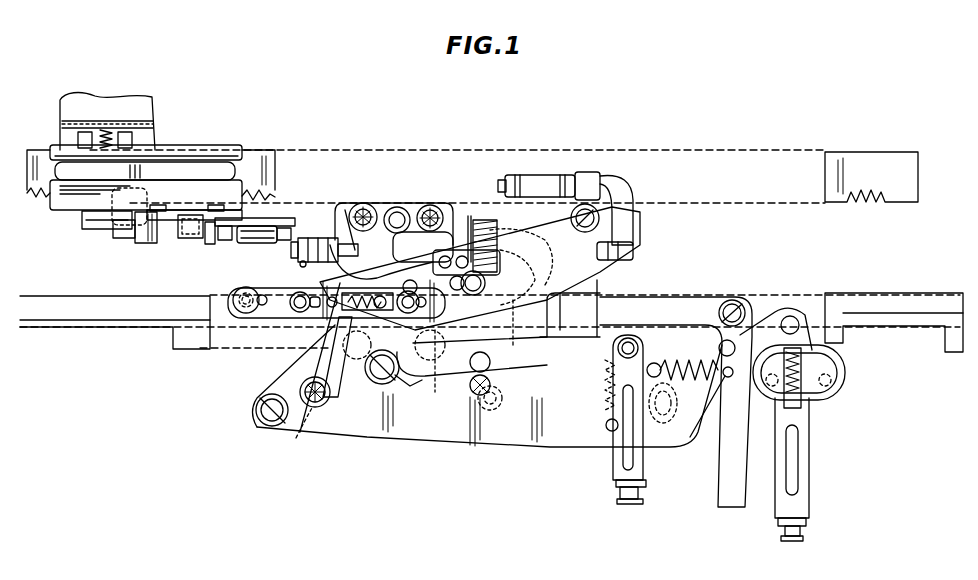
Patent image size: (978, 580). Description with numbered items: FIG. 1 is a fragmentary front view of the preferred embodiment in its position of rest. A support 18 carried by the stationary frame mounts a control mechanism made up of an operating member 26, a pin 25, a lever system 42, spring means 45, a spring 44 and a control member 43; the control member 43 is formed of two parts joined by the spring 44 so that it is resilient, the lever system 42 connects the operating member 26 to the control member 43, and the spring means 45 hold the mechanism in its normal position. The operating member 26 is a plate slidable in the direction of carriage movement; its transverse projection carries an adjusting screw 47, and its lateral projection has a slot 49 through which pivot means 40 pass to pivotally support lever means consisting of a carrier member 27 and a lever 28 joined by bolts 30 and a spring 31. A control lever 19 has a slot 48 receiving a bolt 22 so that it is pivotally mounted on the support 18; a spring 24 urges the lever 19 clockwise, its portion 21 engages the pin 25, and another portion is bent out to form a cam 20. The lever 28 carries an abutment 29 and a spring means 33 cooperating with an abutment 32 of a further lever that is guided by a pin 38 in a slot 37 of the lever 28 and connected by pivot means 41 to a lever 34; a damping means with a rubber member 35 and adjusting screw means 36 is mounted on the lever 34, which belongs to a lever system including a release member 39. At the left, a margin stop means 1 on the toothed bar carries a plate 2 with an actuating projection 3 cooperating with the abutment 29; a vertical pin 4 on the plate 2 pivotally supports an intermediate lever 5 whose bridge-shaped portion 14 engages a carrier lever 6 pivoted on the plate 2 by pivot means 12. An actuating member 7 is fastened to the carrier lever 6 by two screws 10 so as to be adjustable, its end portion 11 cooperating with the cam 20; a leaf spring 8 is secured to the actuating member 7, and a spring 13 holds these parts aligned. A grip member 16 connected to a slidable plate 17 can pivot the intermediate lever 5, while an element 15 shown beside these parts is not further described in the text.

The margin stop means 1 is at (52, 149).
The plate 2 is at (68, 205).
The actuating projection 3 is at (98, 226).
The substantially vertical pin 4 is at (162, 206).
The intermediate lever 5 is at (140, 246).
The carrier lever 6 is at (225, 240).
The actuating member 7 is at (252, 243).
The leaf spring 8 is at (316, 238).
The screws 10 is at (283, 218).
The end portion 11 is at (280, 240).
The pivot means 12 is at (215, 205).
The spring 13 is at (210, 235).
The bridge-shaped portion 14 is at (172, 240).
The block 15 is at (188, 238).
The grip member 16 is at (149, 108).
The plate 17 is at (122, 240).
The support 18 is at (620, 190).
The control lever 19 is at (310, 352).
The cam 20 is at (432, 207).
The portion 21 is at (350, 205).
The bolt 22 is at (332, 388).
The spring 24 is at (286, 428).
The pin 25 is at (395, 208).
The operating member 26 is at (352, 210).
The carrier member 27 is at (262, 287).
The lever 28 is at (326, 310).
The abutment 29 is at (468, 216).
The bolts 30 is at (295, 314).
The spring 31 is at (375, 312).
The abutment 32 is at (480, 266).
The spring means 33 is at (488, 220).
The lever 34 is at (590, 288).
The rubber member 35 is at (588, 172).
The adjusting screw means 36 is at (514, 176).
The slot 37 is at (465, 292).
The pin 38 is at (623, 393).
The release member 39 is at (613, 460).
The pivot means 40 is at (233, 300).
The pivot means 41 is at (600, 225).
The lever system 42 is at (470, 383).
The control member 43 is at (810, 450).
The spring 44 is at (805, 385).
The spring means 45 is at (600, 405).
The adjusting screw 47 is at (301, 265).
The slot 48 is at (308, 436).
The slot 49 is at (255, 312).